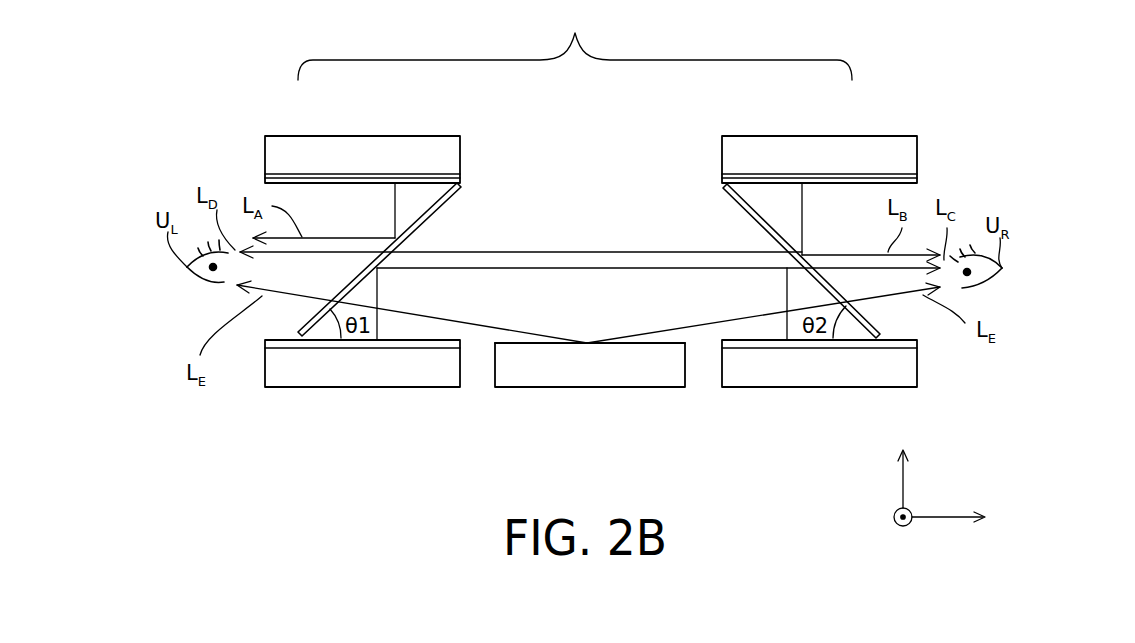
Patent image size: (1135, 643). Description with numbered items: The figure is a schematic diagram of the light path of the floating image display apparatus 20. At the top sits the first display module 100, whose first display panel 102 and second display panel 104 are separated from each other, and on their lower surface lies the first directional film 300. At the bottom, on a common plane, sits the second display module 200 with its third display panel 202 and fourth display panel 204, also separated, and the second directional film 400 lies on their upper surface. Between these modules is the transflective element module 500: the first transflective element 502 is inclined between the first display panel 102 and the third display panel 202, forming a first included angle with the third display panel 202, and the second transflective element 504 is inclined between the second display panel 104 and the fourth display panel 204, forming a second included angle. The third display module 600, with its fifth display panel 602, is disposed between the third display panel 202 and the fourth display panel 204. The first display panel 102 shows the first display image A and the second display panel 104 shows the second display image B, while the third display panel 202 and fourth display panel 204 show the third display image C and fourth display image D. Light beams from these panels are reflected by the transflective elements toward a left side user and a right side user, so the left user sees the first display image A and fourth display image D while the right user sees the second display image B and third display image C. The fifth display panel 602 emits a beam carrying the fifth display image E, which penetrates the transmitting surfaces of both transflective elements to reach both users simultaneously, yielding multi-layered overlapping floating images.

The floating image display apparatus 20 is at (957, 442).
The first display module 100 is at (575, 41).
The first display panel 102 is at (338, 145).
The second display panel 104 is at (849, 131).
The second display module 200 is at (629, 221).
The third display panel 202 is at (317, 372).
The fourth display panel 204 is at (858, 391).
The first directional film 300 is at (906, 181).
The second directional film 400 is at (910, 348).
The transflective element module 500 is at (641, 201).
The first transflective element 502 is at (357, 283).
The second transflective element 504 is at (746, 208).
The third display module 600 is at (590, 390).
The fifth display panel 602 is at (533, 375).
The first display image A is at (320, 194).
The second display image B is at (831, 187).
The third display image C is at (287, 337).
The fourth display image D is at (894, 338).
The fifth display image E is at (510, 340).